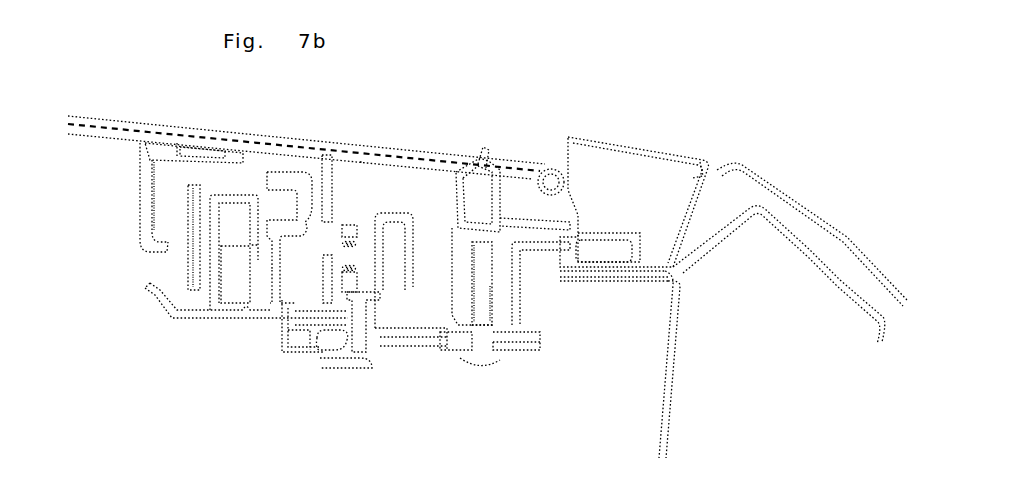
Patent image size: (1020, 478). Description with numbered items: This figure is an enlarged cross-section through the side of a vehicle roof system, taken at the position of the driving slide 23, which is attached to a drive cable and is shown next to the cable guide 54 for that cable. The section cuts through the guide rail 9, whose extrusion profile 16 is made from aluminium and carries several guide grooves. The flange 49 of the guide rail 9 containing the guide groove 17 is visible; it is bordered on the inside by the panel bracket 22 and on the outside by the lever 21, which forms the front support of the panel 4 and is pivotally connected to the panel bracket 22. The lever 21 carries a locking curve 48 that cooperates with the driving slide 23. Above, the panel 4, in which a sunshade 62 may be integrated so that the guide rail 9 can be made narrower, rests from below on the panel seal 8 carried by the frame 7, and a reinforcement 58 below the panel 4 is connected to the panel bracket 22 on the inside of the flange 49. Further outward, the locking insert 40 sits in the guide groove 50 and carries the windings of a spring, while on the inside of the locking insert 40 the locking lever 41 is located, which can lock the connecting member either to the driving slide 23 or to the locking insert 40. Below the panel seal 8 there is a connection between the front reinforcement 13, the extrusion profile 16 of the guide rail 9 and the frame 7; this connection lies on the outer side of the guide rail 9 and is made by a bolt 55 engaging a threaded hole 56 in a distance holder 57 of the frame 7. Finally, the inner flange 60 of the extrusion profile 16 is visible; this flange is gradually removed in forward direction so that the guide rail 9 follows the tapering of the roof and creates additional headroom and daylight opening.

The panel 4 is at (362, 162).
The frame 7 is at (520, 172).
The panel seal 8 is at (438, 168).
The guide rail 9 is at (150, 320).
The front reinforcement 13 is at (523, 343).
The extrusion profile 16 is at (508, 338).
The guide groove 17 is at (230, 223).
The lever 21 is at (308, 203).
The panel bracket 22 is at (192, 205).
The driving slide 23 is at (250, 330).
The locking insert 40 is at (367, 333).
The locking lever 41 is at (313, 273).
The locking curve 48 is at (280, 203).
The flange 49 is at (233, 225).
The guide groove 50 is at (360, 345).
The cable guide 54 is at (320, 347).
The bolt 55 is at (482, 347).
The threaded hole 56 is at (485, 277).
The distance holder 57 is at (457, 268).
The reinforcement 58 is at (212, 160).
The inner flange 60 is at (150, 293).
The sunshade 62 is at (145, 133).